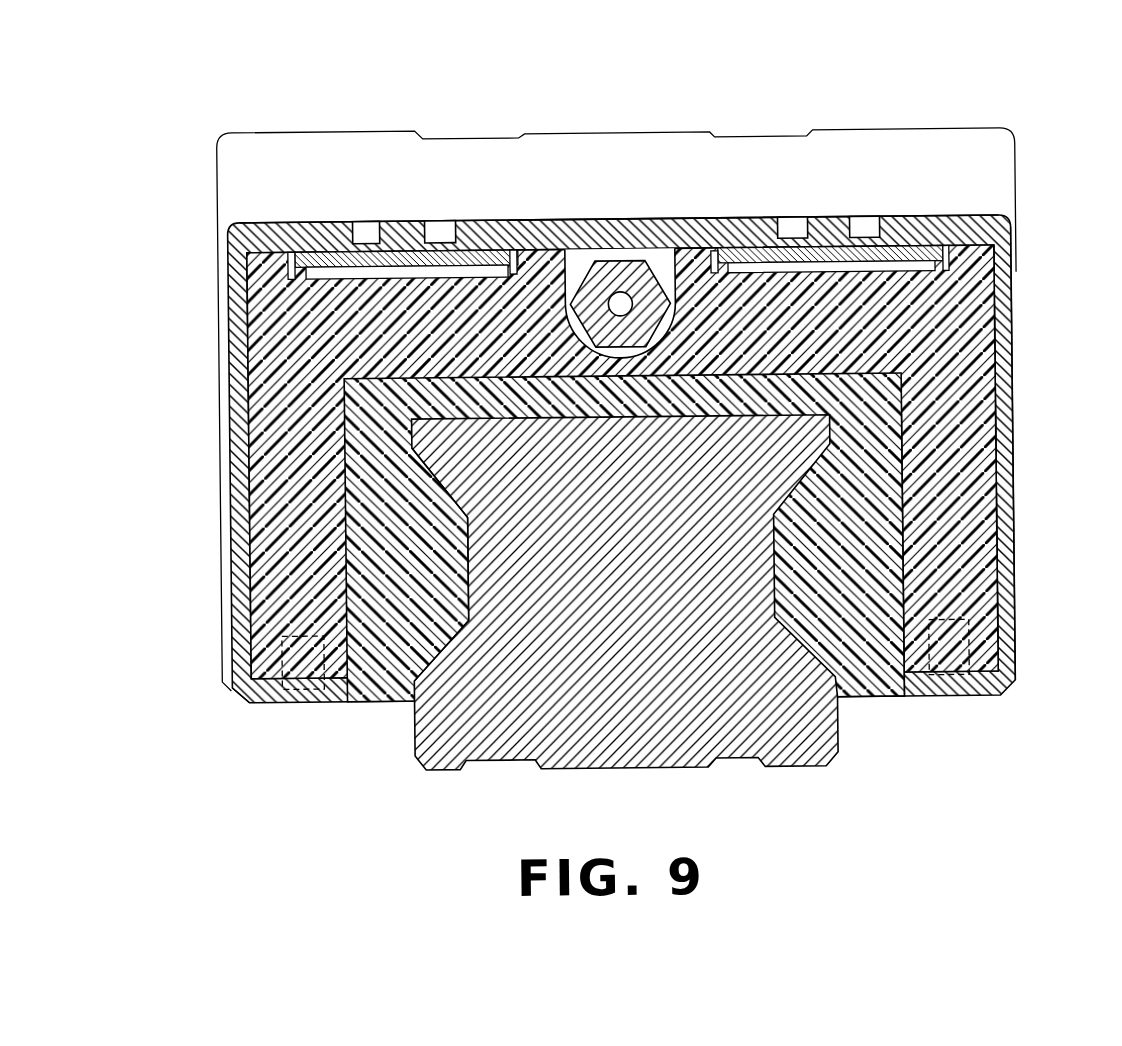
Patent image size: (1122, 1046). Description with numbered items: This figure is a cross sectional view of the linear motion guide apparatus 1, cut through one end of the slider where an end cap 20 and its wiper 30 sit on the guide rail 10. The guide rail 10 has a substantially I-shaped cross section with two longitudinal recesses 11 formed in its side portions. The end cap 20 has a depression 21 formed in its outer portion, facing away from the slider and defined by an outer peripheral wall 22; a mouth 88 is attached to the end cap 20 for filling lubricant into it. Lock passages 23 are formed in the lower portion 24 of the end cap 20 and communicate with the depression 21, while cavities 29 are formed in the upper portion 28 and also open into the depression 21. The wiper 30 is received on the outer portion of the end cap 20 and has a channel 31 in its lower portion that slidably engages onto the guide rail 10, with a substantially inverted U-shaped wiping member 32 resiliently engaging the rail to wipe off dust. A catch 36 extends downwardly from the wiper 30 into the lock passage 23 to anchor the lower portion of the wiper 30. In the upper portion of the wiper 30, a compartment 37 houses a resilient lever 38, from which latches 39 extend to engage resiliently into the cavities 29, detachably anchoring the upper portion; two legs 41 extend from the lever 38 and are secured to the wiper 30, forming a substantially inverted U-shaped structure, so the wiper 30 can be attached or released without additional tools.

The linear motion guide apparatus 1 is at (553, 104).
The guide rail 10 is at (607, 746).
The longitudinal recesses 11 is at (787, 580).
The end cap 20 is at (1015, 387).
The depression 21 is at (995, 476).
The outer peripheral wall 22 is at (1000, 533).
The lock passage 23 is at (282, 641).
The lower portion 24 is at (233, 696).
The upper portion 28 is at (303, 223).
The cavities 29 is at (440, 232).
The wiper 30 is at (288, 473).
The channel 31 is at (478, 580).
The wiping member 32 is at (372, 683).
The catch 36 is at (949, 658).
The compartment 37 is at (842, 274).
The lever 38 is at (748, 262).
The latches 39 is at (862, 247).
The legs 41 is at (252, 279).
The mouth 88 is at (622, 296).